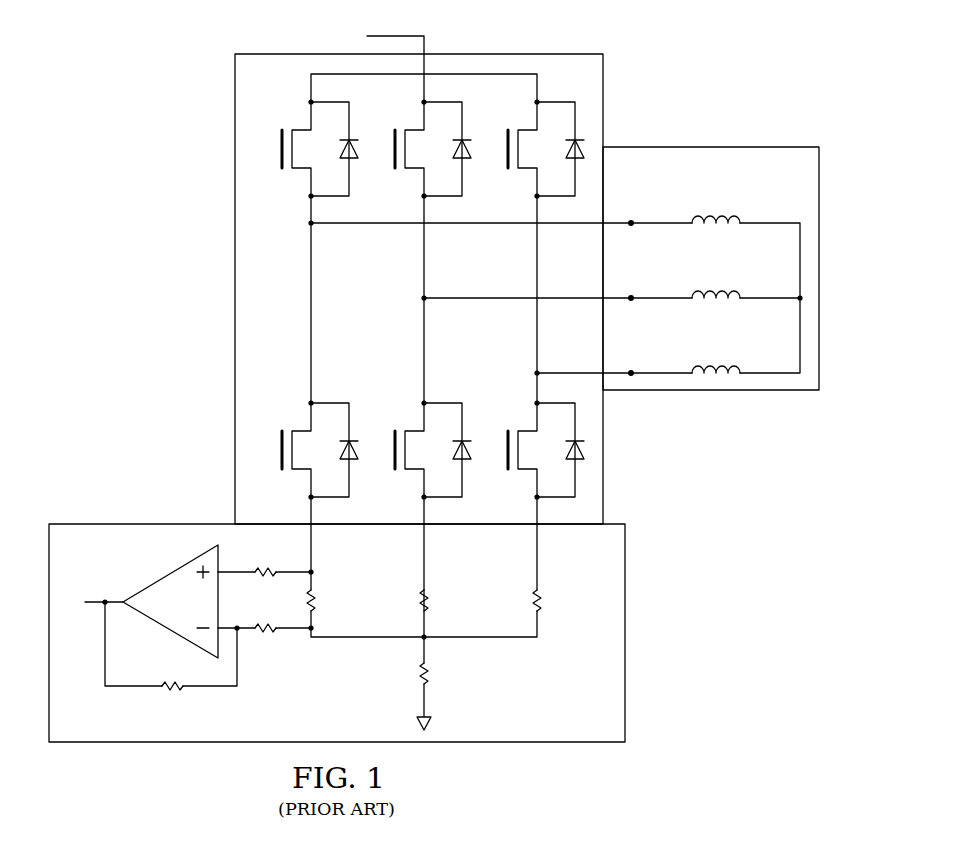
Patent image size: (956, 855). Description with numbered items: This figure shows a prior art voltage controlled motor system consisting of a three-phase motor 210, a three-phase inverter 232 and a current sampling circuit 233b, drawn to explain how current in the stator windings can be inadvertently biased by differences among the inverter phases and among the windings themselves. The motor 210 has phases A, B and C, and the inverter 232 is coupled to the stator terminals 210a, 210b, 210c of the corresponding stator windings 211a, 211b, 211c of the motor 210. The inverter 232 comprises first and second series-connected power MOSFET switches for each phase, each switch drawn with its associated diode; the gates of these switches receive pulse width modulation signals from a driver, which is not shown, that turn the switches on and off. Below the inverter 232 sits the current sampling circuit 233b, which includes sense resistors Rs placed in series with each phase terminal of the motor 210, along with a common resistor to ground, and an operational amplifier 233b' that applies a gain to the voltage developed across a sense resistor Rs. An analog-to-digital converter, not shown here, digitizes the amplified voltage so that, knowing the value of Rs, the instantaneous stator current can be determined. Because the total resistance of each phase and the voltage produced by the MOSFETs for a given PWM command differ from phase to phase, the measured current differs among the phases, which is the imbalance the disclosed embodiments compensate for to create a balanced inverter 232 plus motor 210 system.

The 3-phase inverter 232 is at (235, 281).
The 3-phase motor 210 is at (565, 231).
The stator terminal 210a is at (631, 221).
The stator terminal 210b is at (631, 296).
The stator terminal 210c is at (631, 371).
The stator winding 211a is at (716, 215).
The stator winding 211b is at (716, 291).
The stator winding 211c is at (716, 366).
The current sampling circuit 233b is at (378, 633).
The operational amplifier 233b' is at (186, 613).